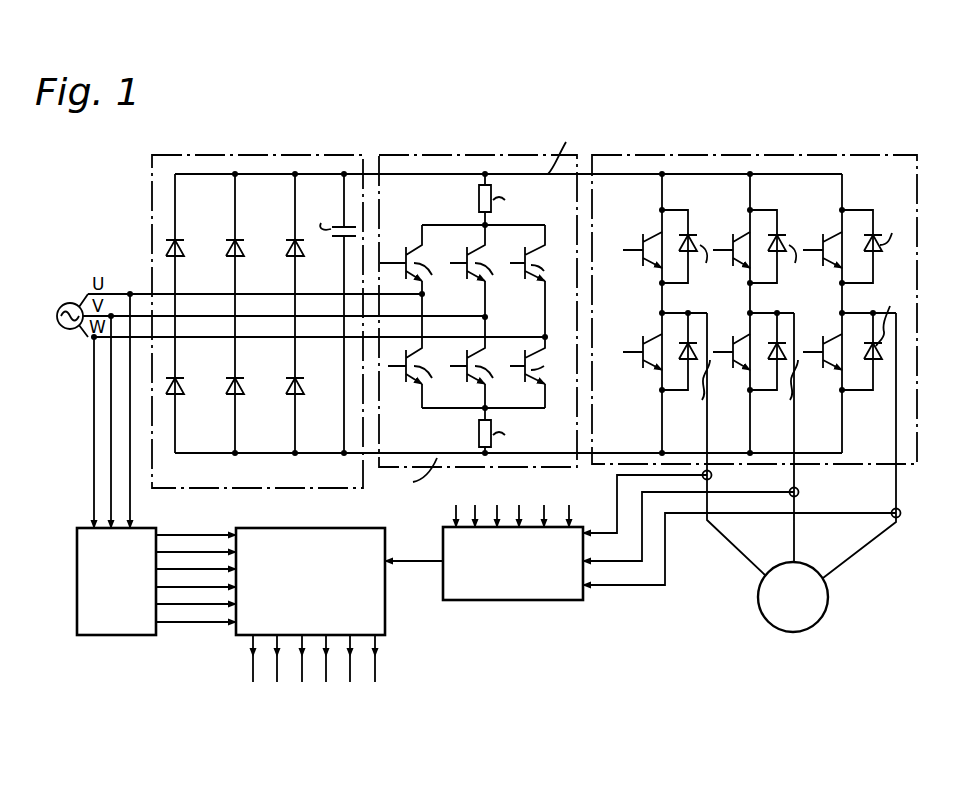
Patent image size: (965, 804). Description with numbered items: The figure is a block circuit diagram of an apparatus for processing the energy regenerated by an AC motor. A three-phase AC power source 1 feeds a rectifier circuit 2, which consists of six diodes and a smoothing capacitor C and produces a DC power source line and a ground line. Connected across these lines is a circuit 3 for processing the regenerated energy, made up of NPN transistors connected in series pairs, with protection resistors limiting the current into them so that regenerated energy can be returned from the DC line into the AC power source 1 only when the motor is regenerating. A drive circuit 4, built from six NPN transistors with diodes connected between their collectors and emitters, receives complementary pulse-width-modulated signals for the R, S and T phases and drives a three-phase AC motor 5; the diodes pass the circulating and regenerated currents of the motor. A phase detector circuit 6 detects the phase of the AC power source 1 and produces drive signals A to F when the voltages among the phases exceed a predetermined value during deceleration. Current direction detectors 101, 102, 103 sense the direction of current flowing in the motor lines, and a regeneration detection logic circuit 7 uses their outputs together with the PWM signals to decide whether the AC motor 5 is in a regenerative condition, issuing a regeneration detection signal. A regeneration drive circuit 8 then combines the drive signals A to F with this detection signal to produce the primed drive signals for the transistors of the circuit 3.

The three-phase AC power source 1 is at (64, 332).
The rectifier circuit 2 is at (245, 153).
The circuit for processing the regenerated energy 3 is at (462, 153).
The drive circuit 4 is at (688, 153).
The three-phase AC motor 5 is at (828, 600).
The phase detector circuit 6 is at (113, 636).
The regeneration detection logic circuit 7 is at (528, 601).
The regeneration drive circuit 8 is at (386, 620).
The current direction detector 101 is at (901, 513).
The current direction detector 102 is at (799, 492).
The current direction detector 103 is at (712, 475).